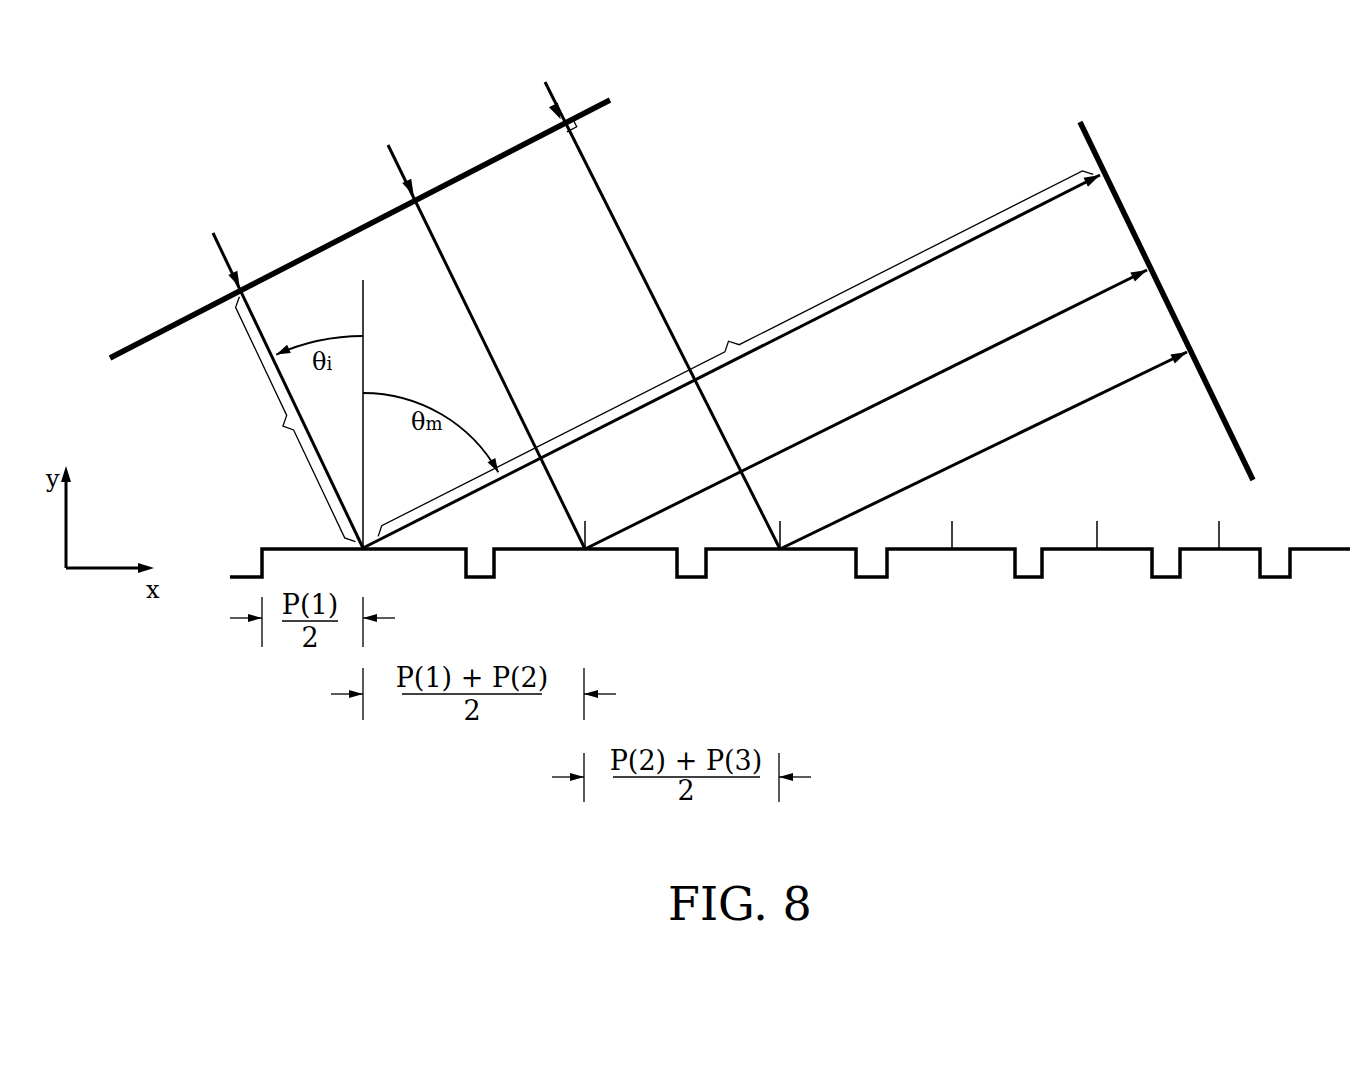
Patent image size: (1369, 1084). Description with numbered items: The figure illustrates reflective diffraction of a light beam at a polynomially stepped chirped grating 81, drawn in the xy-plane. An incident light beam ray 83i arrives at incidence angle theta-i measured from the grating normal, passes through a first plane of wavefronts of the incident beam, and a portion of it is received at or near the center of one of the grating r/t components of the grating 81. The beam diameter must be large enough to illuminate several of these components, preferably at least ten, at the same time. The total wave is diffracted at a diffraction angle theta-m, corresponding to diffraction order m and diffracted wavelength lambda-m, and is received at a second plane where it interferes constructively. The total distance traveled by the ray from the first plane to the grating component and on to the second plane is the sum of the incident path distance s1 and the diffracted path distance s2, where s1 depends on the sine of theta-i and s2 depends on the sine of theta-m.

The incident light beam ray 83i is at (633, 252).
The chirped grating 81 is at (1332, 553).
The incident path distance s1 is at (296, 419).
The diffracted path distance s2 is at (735, 354).